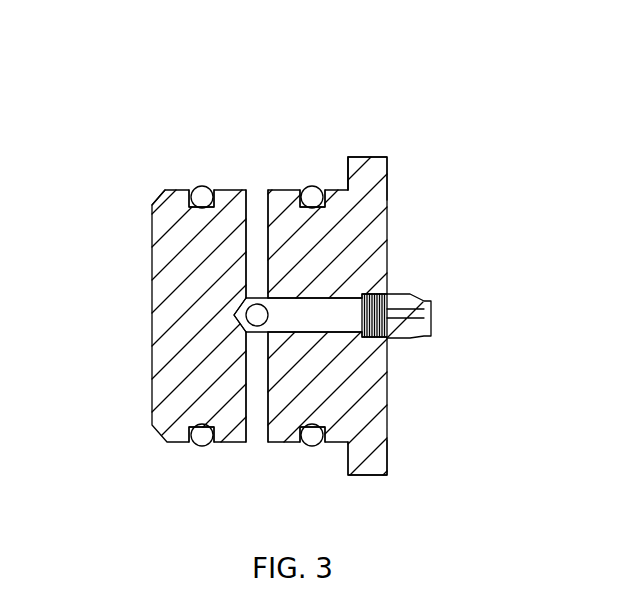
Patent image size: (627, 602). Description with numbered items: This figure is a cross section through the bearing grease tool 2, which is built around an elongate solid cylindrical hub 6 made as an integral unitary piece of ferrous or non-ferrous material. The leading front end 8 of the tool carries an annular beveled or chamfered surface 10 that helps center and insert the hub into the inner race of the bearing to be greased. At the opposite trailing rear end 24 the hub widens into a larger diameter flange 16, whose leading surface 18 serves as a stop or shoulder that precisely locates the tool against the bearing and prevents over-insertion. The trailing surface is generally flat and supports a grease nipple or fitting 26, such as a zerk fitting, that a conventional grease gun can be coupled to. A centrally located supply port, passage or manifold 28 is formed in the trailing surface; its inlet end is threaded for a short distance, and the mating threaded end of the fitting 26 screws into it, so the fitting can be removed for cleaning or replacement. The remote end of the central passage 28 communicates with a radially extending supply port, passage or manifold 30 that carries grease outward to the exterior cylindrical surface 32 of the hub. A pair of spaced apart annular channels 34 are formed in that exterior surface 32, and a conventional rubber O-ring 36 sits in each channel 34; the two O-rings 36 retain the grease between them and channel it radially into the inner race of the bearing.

The grease tool 2 is at (460, 251).
The cylindrical hub 6 is at (144, 367).
The leading front end 8 is at (148, 316).
The chamfered surface 10 is at (101, 186).
The flange 16 is at (403, 284).
The leading surface 18 is at (348, 174).
The trailing rear end 24 is at (395, 270).
The grease nipple or fitting 26 is at (456, 297).
The supply port, passage or manifold 28 is at (363, 351).
The radially extending supply port, passage or manifold 30 is at (214, 303).
The exterior cylindrical surface 32 is at (197, 155).
The annular channel 34 is at (197, 473).
The O-ring 36 is at (270, 287).